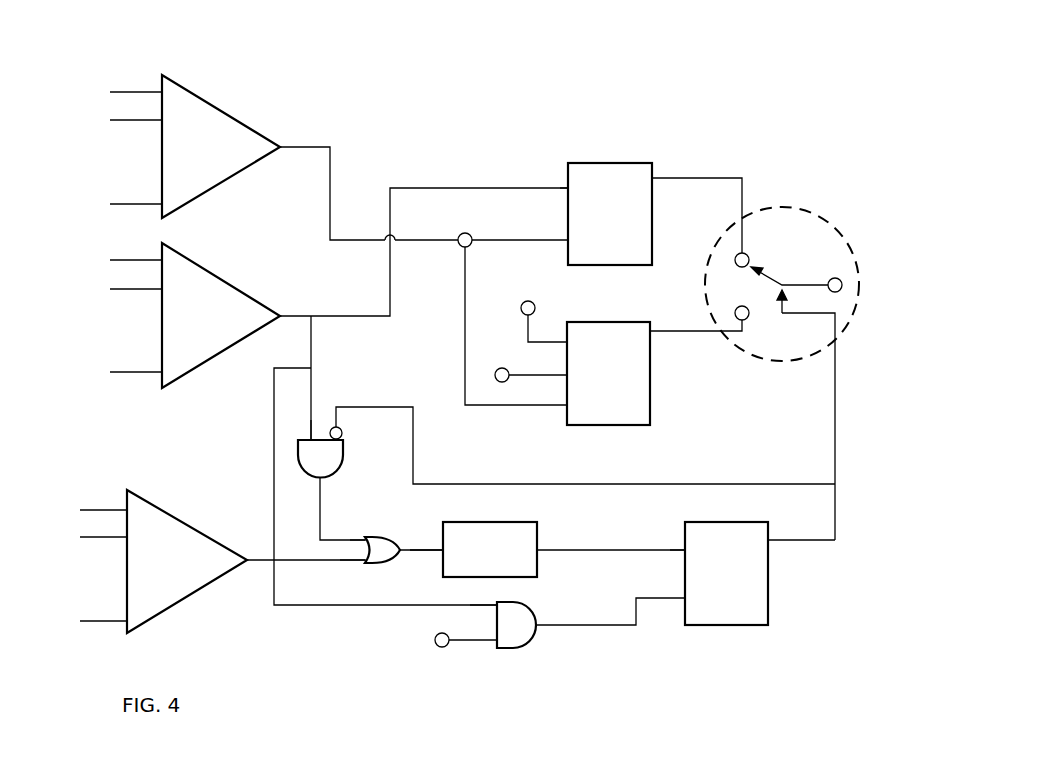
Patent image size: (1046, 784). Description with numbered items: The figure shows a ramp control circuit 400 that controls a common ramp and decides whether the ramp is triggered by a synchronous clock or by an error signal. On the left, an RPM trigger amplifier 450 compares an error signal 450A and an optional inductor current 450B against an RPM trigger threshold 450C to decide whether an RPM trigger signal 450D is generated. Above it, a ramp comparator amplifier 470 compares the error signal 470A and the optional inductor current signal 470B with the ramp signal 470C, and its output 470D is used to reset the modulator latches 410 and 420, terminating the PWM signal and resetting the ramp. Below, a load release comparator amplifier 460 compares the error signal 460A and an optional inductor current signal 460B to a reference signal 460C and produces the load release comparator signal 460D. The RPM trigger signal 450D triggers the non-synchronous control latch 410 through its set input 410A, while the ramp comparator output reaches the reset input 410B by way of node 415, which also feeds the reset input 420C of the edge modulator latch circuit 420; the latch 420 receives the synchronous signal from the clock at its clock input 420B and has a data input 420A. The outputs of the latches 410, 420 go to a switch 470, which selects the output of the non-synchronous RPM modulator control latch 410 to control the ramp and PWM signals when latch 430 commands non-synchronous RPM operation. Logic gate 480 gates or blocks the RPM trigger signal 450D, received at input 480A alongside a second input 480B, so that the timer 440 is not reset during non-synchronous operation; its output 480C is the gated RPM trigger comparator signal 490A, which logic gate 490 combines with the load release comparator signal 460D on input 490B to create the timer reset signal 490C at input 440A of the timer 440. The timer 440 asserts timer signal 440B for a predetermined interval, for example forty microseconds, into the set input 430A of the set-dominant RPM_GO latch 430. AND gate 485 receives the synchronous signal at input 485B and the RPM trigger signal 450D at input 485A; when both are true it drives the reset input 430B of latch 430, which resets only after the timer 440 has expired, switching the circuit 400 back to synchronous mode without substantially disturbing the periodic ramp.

The ramp control circuit 400 is at (441, 97).
The ramp comparator amplifier / switch 470 is at (222, 158).
The error signal 470A is at (851, 223).
The inductor current signal 470B is at (778, 368).
The ramp signal 470C is at (740, 268).
The output of amplifier 470 / switch arm 470D is at (283, 146).
The RPM trigger amplifier 450 is at (222, 326).
The error signal 450A is at (110, 261).
The inductor current 450B is at (110, 289).
The RPM trigger threshold 450C is at (110, 373).
The RPM trigger signal 450D is at (283, 315).
The load release comparator amplifier 460 is at (189, 570).
The error signal 460A is at (76, 510).
The inductor current signal 460B is at (76, 538).
The reference signal 460C is at (76, 622).
The load release comparator signal 460D is at (247, 558).
The non-synchronous RPM modulator control latch 410 is at (642, 237).
The set input of flip-flop 410 410A is at (567, 187).
The reset input of flip-flop 410 410B is at (567, 240).
The node 415 is at (454, 229).
The edge modulator latch circuit 420 is at (644, 384).
The data input of flip-flop 420 420A is at (535, 310).
The synchronous clock input 420B is at (522, 362).
The reset input of flip-flop 420 420C is at (565, 407).
The RPM_GO latch 430 is at (759, 590).
The set input of flip-flop 430 430A is at (684, 548).
The reset input of flip-flop 430 430B is at (683, 599).
The timer 440 is at (509, 560).
The input of block 440 440A is at (440, 551).
The timer signal 440B is at (540, 548).
The logic gate 480 is at (322, 463).
The first input of AND gate 480 480A is at (346, 408).
The inverted second input of AND gate 480 480B is at (340, 440).
The output of AND gate 480 480C is at (320, 482).
The AND gate 485 is at (517, 637).
The RPM trigger input 485A is at (493, 605).
The synchronous signal input 485B is at (441, 641).
The logic gate 490 is at (381, 548).
The gated RPM trigger comparator signal 490A is at (368, 541).
The second input of OR gate 490 490B is at (365, 562).
The timer reset signal 490C is at (405, 548).